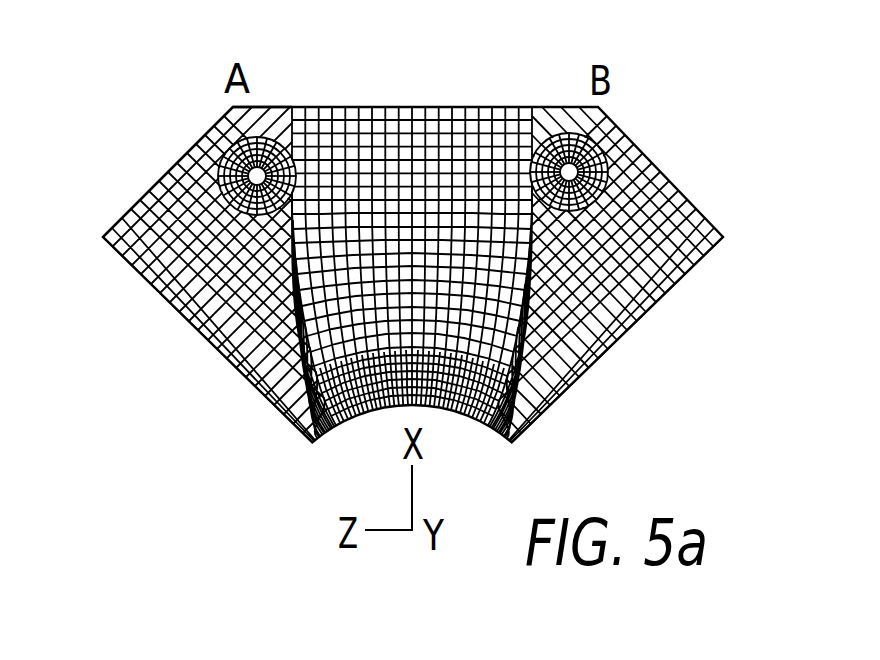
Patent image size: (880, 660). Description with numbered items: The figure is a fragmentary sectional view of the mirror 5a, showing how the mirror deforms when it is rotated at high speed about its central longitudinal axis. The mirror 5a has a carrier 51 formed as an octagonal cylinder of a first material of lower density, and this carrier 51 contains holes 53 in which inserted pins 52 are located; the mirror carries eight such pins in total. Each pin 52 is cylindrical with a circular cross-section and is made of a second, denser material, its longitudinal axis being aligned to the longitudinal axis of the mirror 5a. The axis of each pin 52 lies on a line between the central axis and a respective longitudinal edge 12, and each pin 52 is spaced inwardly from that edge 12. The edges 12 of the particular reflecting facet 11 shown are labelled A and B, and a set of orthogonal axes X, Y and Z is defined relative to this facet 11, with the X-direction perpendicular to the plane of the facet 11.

The optically flat reflecting facet 11 is at (153, 187).
The longitudinal edge 12 is at (233, 107).
The carrier 51 is at (617, 330).
The inserted pin 52 is at (482, 123).
The hole 53 is at (610, 183).
The mirror 5a is at (580, 390).